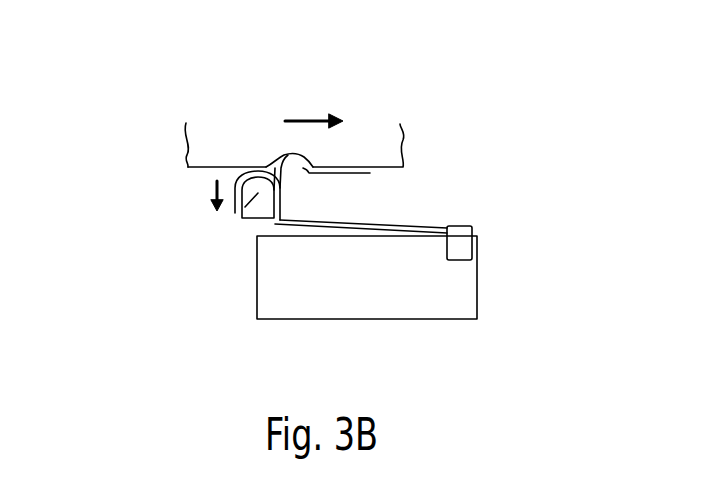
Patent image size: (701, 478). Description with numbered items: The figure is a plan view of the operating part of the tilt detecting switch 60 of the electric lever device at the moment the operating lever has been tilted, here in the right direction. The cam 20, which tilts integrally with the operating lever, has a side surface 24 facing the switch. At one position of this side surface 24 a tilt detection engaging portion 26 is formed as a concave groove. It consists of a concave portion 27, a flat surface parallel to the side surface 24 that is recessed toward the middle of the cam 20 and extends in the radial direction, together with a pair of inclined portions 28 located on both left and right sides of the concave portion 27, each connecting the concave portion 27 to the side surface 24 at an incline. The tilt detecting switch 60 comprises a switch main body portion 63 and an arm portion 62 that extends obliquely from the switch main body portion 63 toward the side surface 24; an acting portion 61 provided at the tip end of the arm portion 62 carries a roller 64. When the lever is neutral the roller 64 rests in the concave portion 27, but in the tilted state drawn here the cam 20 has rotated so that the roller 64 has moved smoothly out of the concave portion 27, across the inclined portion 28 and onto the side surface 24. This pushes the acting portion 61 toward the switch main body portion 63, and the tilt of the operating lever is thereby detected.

The cam 20 is at (236, 138).
The side surface 24 is at (195, 172).
The tilt detection engaging portion 26 is at (289, 152).
The concave portion 27 is at (302, 153).
The inclined portions 28 is at (291, 160).
The tilt detecting switch 60 is at (481, 278).
The acting portion 61 is at (246, 204).
The arm portion 62 is at (388, 222).
The switch main body portion 63 is at (365, 302).
The roller 64 is at (233, 215).